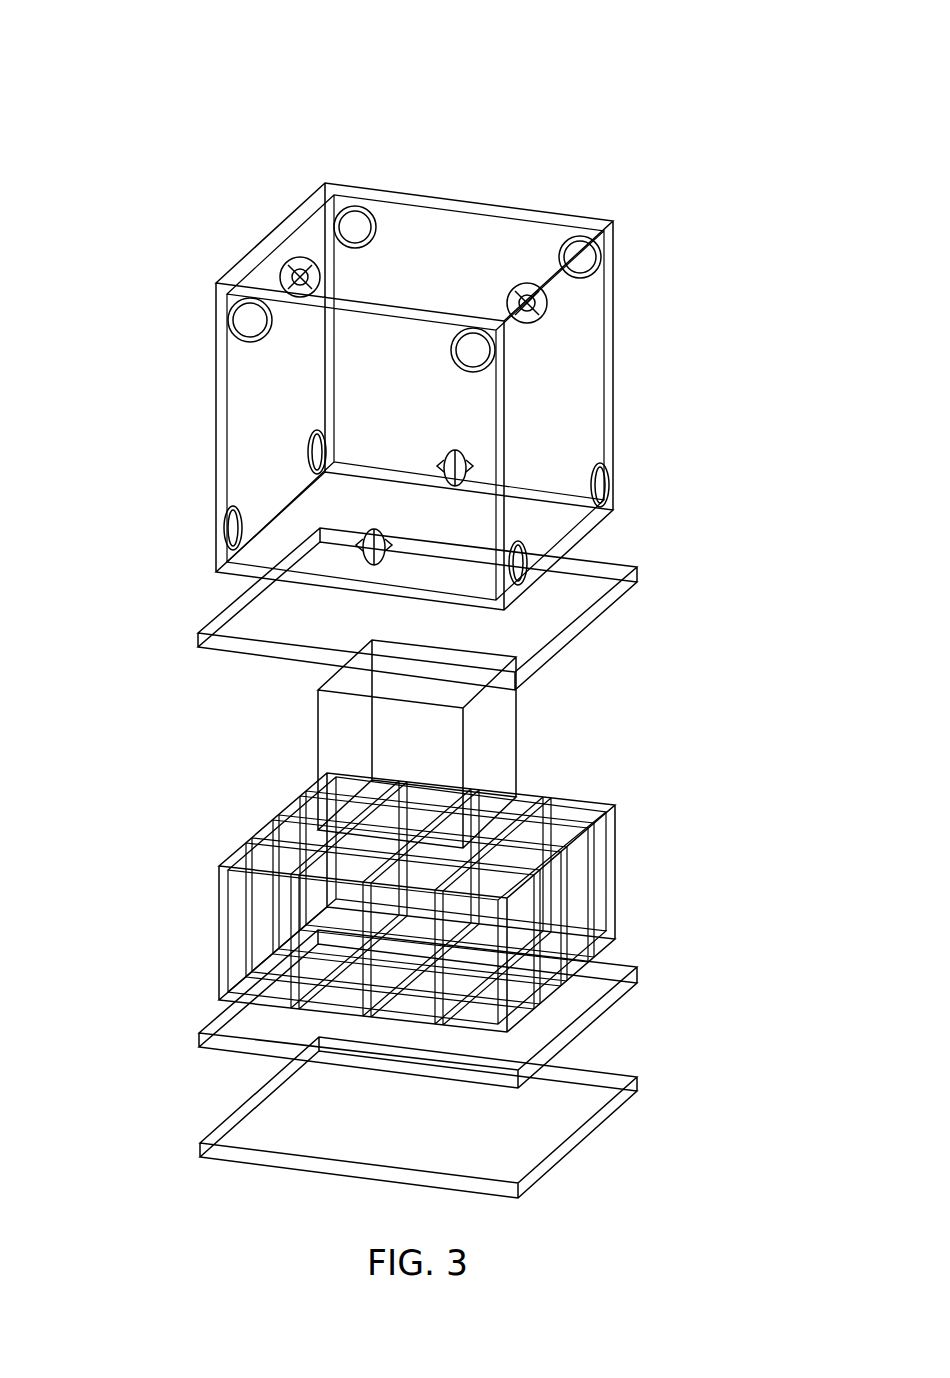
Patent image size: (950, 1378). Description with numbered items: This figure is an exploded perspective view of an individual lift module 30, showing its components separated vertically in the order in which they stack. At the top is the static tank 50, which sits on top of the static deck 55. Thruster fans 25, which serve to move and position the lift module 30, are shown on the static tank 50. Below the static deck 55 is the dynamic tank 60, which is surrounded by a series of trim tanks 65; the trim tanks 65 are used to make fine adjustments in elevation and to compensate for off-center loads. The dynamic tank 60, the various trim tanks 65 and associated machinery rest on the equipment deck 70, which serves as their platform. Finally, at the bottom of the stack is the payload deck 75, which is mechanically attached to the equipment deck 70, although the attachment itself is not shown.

The thruster fans 25 is at (312, 263).
The lift module 30 is at (393, 602).
The static tank 50 is at (530, 402).
The static deck 55 is at (600, 610).
The dynamic tank 60 is at (417, 745).
The trim tanks 65 is at (545, 922).
The equipment deck 70 is at (203, 1032).
The payload deck 75 is at (603, 1122).